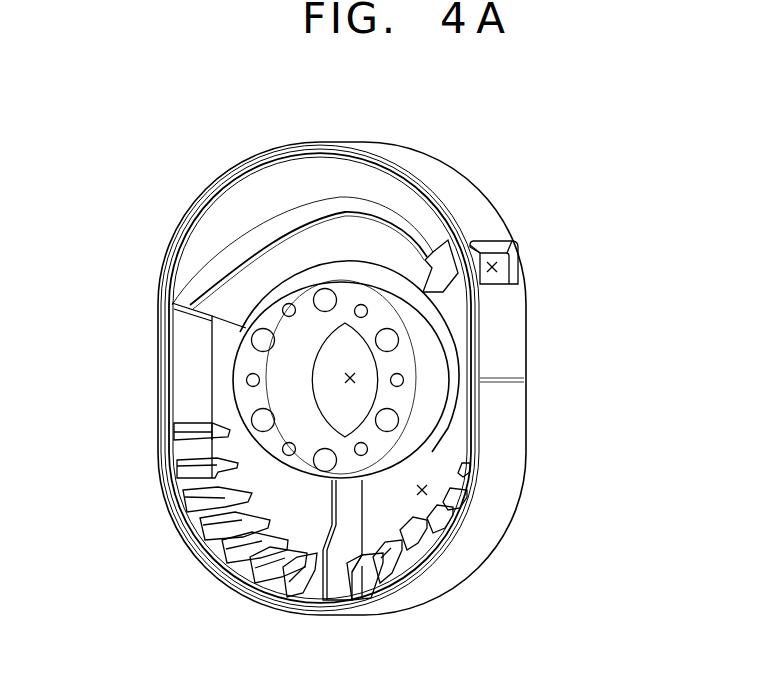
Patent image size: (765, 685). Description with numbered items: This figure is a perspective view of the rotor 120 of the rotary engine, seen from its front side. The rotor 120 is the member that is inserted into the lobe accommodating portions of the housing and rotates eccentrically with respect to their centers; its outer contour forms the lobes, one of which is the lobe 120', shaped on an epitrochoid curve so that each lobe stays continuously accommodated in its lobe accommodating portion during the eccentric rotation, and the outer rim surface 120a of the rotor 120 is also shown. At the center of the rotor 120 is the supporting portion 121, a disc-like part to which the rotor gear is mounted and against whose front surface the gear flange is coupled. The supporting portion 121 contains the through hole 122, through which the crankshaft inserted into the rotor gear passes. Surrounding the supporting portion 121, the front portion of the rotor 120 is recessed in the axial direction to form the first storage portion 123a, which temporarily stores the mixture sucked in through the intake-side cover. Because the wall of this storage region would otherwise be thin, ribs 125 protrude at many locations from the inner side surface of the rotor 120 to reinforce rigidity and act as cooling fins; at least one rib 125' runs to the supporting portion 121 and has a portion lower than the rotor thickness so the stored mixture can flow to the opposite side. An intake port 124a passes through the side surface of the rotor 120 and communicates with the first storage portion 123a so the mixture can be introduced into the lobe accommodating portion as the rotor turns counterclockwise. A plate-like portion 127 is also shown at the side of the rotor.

The rotor 120 is at (322, 378).
The lobe 120' is at (351, 363).
The rim front face 120a is at (474, 207).
The intake port 124a is at (492, 267).
The through hole 122 is at (352, 378).
The supporting portion 121 is at (402, 402).
The plate 127 is at (170, 388).
The rib 125' is at (468, 540).
The first storage portion 123a is at (425, 490).
The ribs 125 is at (377, 537).